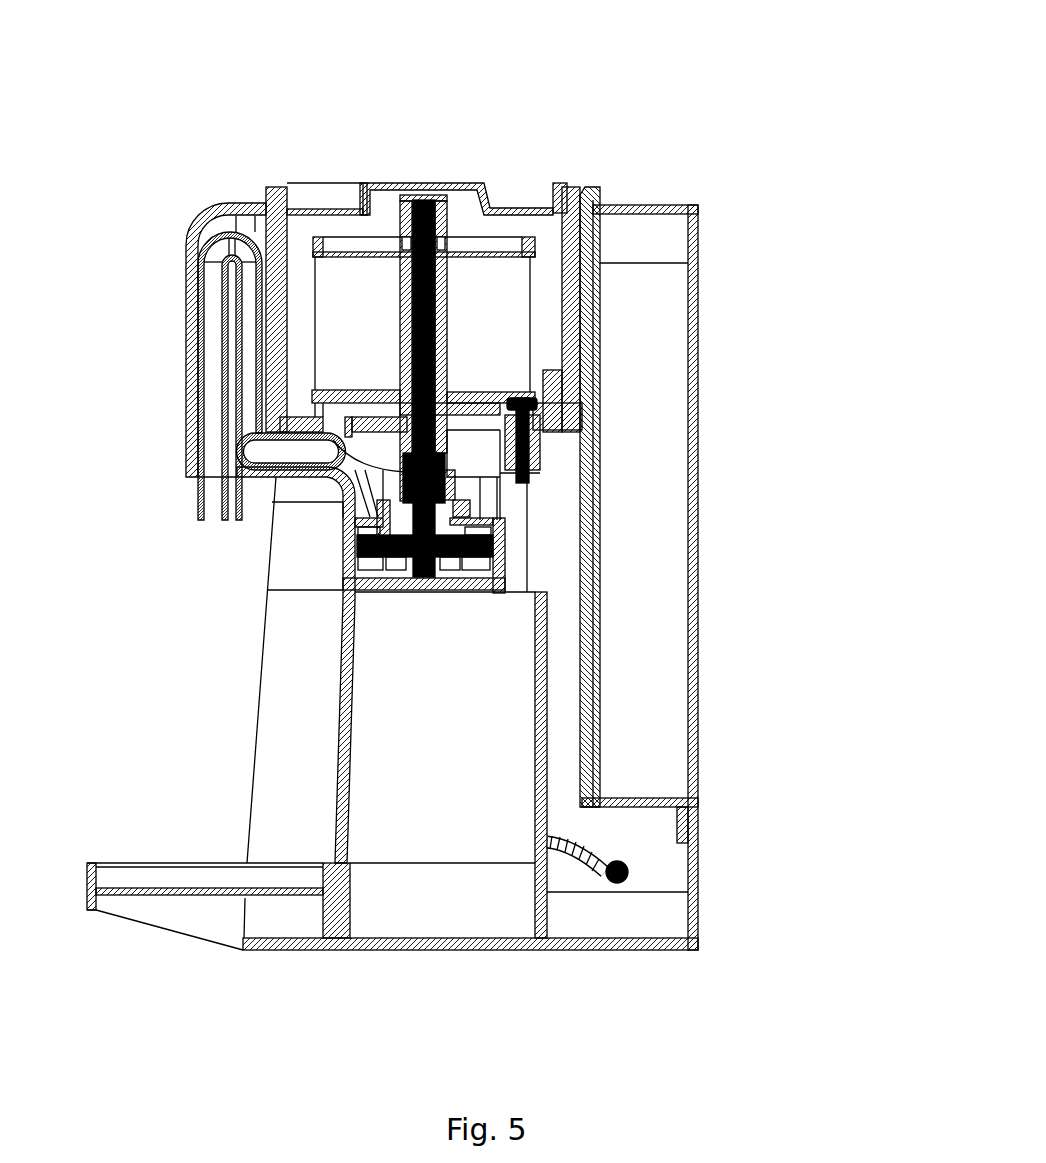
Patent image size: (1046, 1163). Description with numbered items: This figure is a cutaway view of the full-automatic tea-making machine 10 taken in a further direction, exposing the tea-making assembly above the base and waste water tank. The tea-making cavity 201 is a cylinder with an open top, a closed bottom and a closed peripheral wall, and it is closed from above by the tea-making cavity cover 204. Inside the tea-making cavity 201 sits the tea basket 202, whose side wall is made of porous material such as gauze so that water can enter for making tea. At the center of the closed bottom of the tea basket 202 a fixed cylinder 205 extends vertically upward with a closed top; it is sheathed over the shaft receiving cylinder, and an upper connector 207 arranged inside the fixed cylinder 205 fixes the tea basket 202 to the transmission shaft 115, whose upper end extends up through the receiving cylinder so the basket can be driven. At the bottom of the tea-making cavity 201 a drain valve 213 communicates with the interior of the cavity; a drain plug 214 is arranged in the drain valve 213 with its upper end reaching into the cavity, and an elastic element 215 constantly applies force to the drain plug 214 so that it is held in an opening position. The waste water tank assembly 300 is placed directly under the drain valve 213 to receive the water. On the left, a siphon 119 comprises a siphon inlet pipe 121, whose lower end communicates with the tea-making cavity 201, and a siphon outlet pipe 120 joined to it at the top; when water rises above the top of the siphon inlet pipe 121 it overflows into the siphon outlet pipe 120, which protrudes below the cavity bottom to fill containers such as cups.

The full-automatic tea-making machine 10 is at (775, 126).
The transmission shaft 115 is at (433, 305).
The siphon 119 is at (233, 234).
The siphon outlet pipe 120 is at (213, 401).
The siphon inlet pipe 121 is at (250, 367).
The tea-making cavity 201 is at (567, 198).
The tea basket 202 is at (540, 270).
The tea-making cavity cover 204 is at (337, 208).
The fixed cylinder 205 is at (492, 278).
The upper connector 207 is at (407, 196).
The drain valve 213 is at (540, 405).
The drain plug 214 is at (555, 358).
The elastic element 215 is at (545, 450).
The waste water tank assembly 300 is at (510, 760).